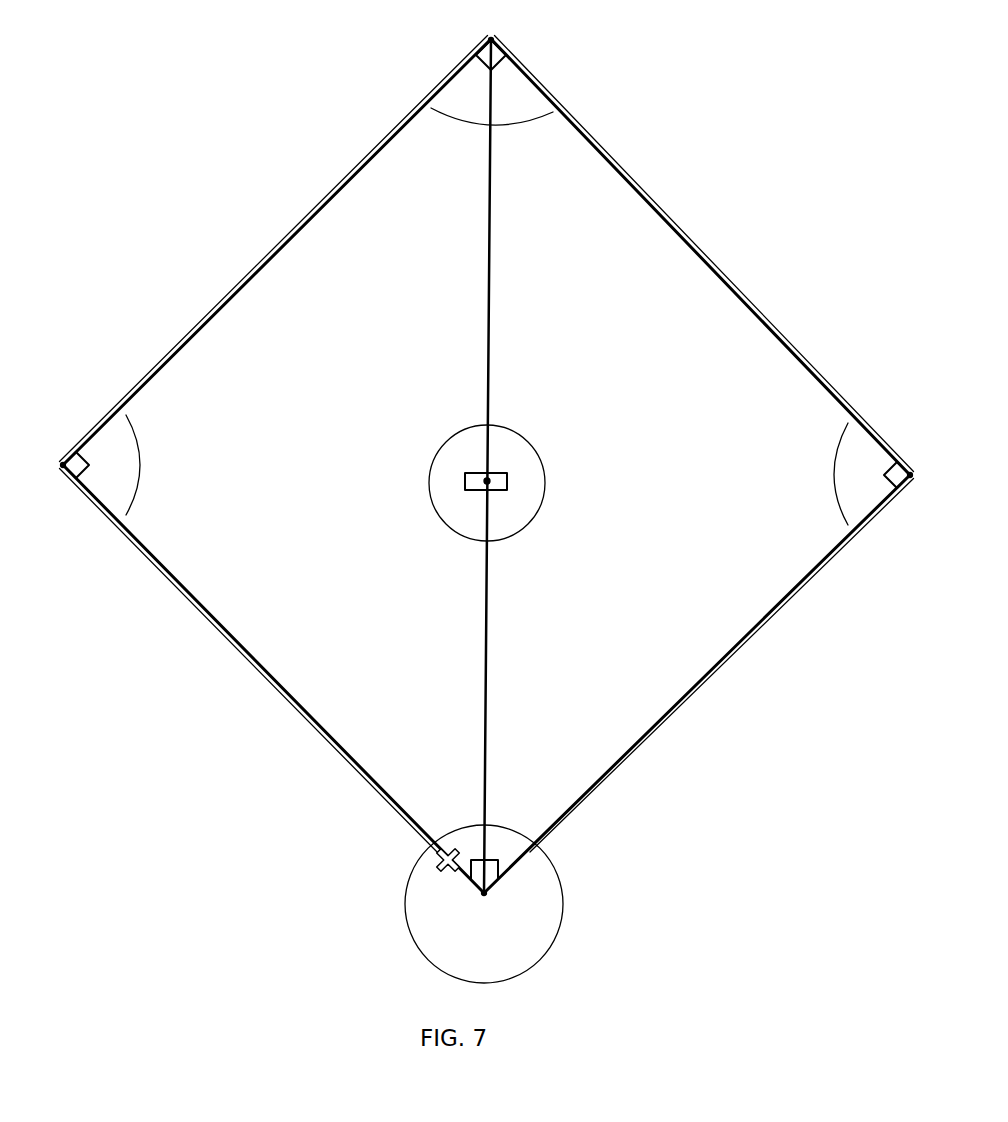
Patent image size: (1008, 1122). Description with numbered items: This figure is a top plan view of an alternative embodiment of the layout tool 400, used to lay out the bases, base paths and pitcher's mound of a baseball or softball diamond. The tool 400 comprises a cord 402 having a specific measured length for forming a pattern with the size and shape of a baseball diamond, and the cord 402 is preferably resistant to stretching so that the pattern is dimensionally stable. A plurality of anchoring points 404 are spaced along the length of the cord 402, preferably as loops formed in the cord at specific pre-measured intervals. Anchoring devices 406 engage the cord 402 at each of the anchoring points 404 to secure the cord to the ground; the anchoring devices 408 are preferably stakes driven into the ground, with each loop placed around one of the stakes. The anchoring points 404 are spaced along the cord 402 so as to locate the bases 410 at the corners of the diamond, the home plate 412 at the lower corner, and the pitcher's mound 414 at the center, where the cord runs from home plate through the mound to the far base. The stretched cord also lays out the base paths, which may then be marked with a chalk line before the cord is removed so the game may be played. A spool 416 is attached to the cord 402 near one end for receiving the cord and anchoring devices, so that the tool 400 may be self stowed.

The tool 400 is at (708, 192).
The cord 402 is at (770, 613).
The anchoring points 404 is at (491, 39).
The anchoring devices 406 is at (490, 480).
The anchoring devices 408 is at (491, 39).
The bases 410 is at (478, 50).
The home plate 412 is at (497, 878).
The pitcher's mound 414 is at (508, 480).
The spool 416 is at (447, 863).